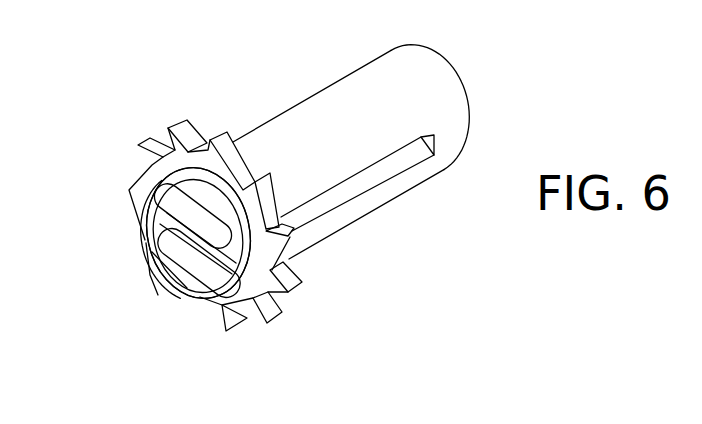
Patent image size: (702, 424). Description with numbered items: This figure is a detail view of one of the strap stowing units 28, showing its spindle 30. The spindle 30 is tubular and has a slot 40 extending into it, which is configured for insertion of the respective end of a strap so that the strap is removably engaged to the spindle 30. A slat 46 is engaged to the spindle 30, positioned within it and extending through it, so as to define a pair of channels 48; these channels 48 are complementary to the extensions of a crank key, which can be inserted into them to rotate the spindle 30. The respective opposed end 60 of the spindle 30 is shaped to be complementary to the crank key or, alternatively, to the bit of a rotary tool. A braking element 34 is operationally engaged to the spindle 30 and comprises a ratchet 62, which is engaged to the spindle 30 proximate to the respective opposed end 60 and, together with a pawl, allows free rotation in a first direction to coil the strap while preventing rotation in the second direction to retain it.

The strap stowing unit 28 is at (138, 313).
The spindle 30 is at (437, 63).
The braking element 34 is at (261, 265).
The slot 40 is at (370, 182).
The slat 46 is at (183, 236).
The channels 48 is at (208, 222).
The respective opposed end 60 is at (147, 209).
The ratchet 62 is at (275, 328).